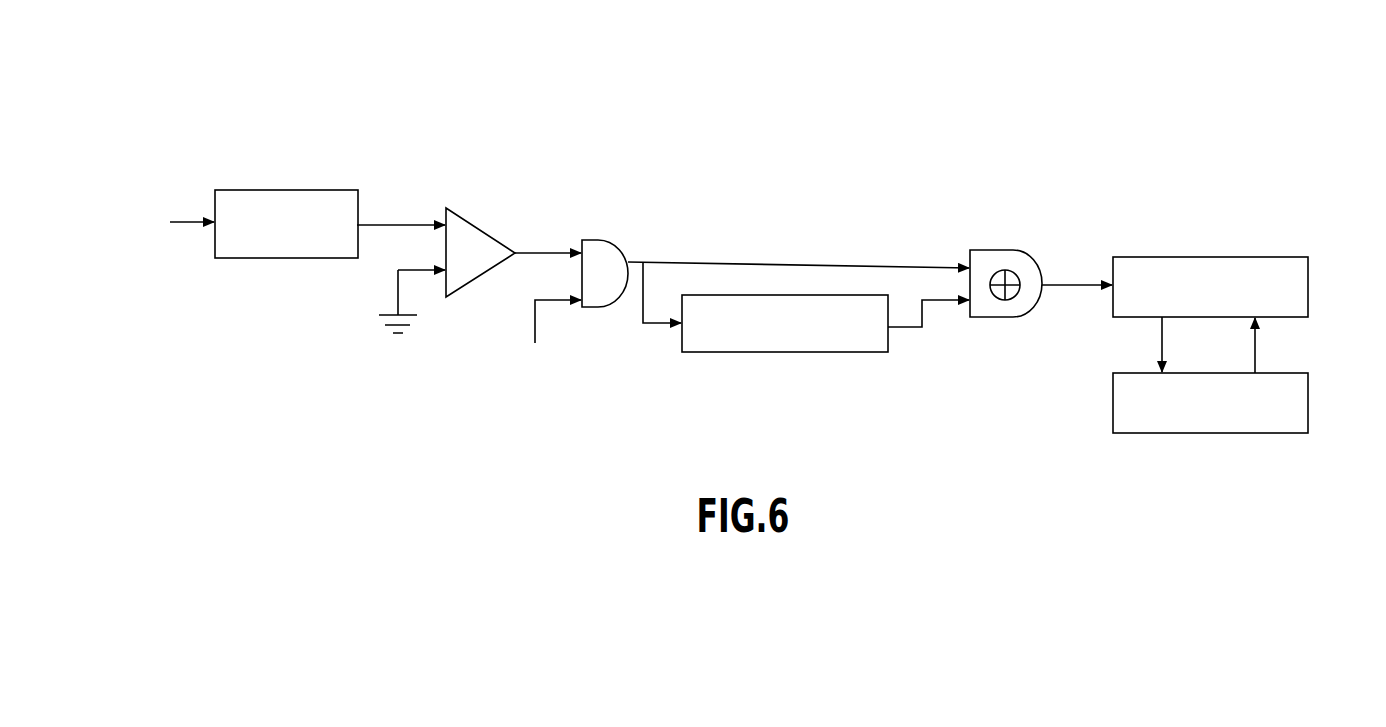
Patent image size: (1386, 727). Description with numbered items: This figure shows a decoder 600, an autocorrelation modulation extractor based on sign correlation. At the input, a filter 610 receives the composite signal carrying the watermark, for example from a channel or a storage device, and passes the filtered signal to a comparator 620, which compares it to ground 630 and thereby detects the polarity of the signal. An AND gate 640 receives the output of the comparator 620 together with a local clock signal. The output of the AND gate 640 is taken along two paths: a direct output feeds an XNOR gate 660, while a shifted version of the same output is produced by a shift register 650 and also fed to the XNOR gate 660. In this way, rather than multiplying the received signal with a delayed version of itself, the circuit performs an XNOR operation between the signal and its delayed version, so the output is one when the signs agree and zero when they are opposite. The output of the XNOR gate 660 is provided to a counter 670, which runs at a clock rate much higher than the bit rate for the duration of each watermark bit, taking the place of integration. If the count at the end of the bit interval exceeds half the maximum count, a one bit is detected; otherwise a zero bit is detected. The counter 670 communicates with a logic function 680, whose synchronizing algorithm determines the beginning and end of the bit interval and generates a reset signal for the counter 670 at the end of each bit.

The decoder 600 is at (721, 96).
The filter 610 is at (253, 189).
The comparator 620 is at (488, 232).
The ground 630 is at (366, 325).
The AND gate 640 is at (597, 240).
The shift register 650 is at (785, 353).
The XNOR gate 660 is at (985, 317).
The counter 670 is at (1210, 257).
The logic function 680 is at (1210, 433).